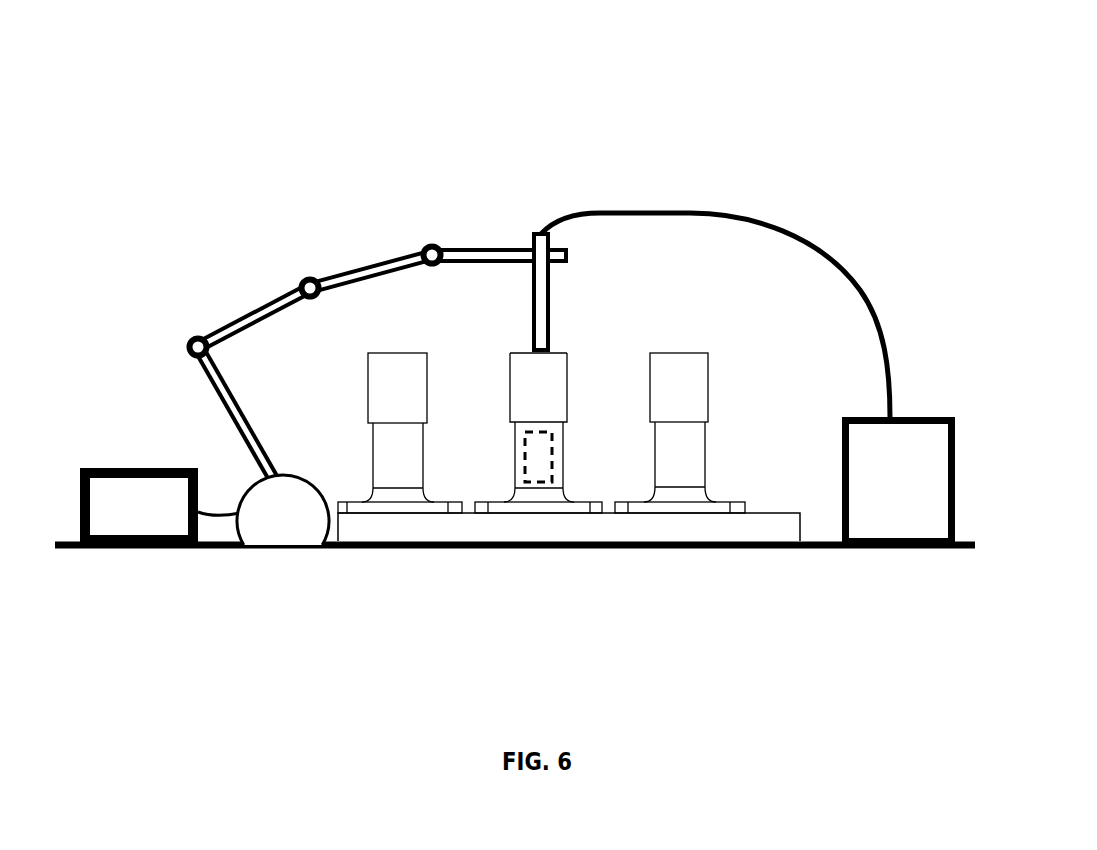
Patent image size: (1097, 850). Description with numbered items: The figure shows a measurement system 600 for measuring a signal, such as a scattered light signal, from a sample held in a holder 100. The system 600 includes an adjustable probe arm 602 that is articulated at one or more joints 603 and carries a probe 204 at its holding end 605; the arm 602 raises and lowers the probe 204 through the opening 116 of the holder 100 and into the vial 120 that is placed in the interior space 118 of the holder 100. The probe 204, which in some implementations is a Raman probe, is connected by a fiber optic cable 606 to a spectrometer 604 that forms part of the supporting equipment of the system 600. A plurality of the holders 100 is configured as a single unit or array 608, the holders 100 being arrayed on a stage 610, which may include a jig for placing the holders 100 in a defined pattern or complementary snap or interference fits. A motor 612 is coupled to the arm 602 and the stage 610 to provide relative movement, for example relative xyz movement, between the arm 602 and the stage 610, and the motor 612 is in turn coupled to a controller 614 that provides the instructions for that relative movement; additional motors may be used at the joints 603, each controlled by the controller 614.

The measurement system 600 is at (750, 77).
The adjustable probe arm 602 is at (253, 307).
The joints 603 is at (302, 283).
The holding end 605 is at (507, 227).
The probe 204 is at (552, 315).
The fiber optic cable 606 is at (713, 213).
The spectrometer 604 is at (865, 418).
The controller 614 is at (132, 468).
The motor 612 is at (257, 483).
The stage 610 is at (757, 532).
The array 608 is at (755, 562).
The holder 100 is at (508, 370).
The interior space 118 is at (530, 412).
The opening 116 is at (560, 348).
The vial 120 is at (552, 455).